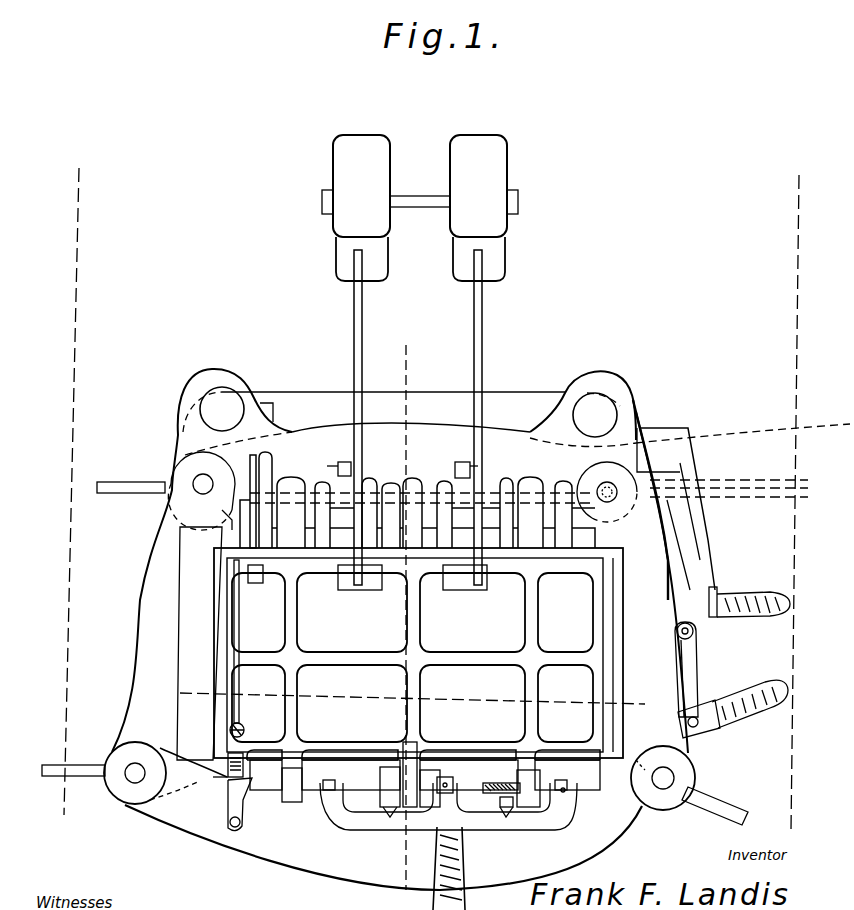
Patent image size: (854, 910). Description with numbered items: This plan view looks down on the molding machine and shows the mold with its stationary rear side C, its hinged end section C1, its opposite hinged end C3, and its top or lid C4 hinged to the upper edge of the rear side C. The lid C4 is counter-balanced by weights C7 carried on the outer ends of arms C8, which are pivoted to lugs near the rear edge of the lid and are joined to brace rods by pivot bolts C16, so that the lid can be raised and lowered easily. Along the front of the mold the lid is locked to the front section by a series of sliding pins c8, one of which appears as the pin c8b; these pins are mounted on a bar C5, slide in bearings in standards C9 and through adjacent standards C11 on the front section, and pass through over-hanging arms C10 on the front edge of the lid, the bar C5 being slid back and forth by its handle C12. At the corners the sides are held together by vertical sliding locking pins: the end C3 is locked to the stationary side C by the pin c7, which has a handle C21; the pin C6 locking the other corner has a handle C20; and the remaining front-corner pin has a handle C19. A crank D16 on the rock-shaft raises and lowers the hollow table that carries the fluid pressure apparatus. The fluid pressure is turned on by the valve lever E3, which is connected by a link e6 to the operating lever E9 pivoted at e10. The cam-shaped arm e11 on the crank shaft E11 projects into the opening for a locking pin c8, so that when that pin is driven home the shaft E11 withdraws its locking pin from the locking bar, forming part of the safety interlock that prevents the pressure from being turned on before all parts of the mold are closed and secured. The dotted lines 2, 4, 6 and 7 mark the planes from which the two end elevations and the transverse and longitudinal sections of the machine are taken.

The counter-balancing weights C7 is at (420, 208).
The arms C8 is at (354, 373).
The sliding pins c8 is at (238, 385).
The stationary rear side C is at (481, 622).
The end section of the mold C3 is at (192, 635).
The handle C21 is at (130, 472).
The sliding locking pin c7 is at (203, 484).
The hinged side C1 is at (616, 552).
The top or lid C4 is at (512, 480).
The pivot bolts C16 is at (336, 470).
The pivot e10 is at (228, 781).
The cam-shaped arm e11 is at (228, 803).
The crank shaft E11 is at (237, 811).
The standards C9 is at (323, 770).
The standards C11 is at (383, 800).
The over-hanging arms C10 is at (292, 800).
The lower pin c8 c8b is at (307, 820).
The handle C12 is at (438, 870).
The bar C5 is at (485, 828).
The handle C19 is at (717, 800).
The sliding locking pin C6 is at (135, 763).
The handle C20 is at (80, 765).
The crank D16 is at (700, 528).
The operating lever E3 is at (678, 622).
The link e6 is at (692, 668).
The operating lever E9 is at (735, 702).
The dotted line 2 is at (822, 193).
The dotted line 4 is at (35, 185).
The dotted line 6 is at (405, 608).
The dotted line 7 is at (405, 704).